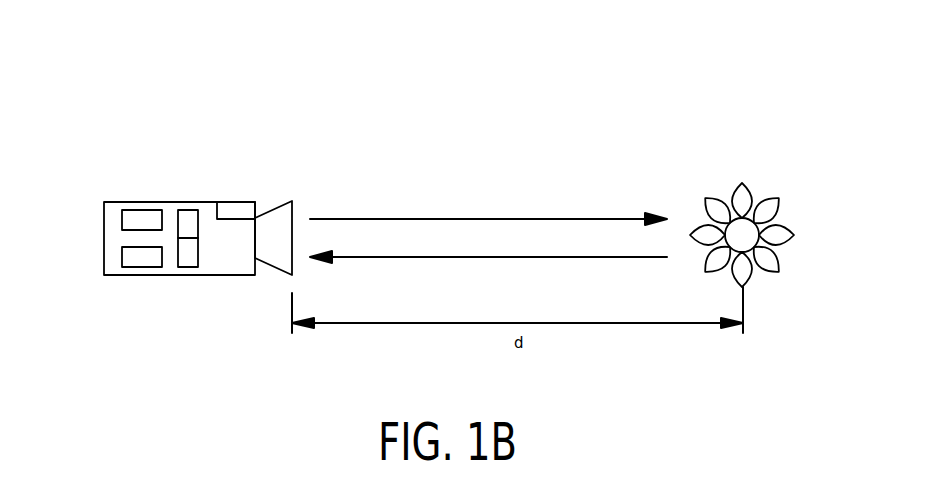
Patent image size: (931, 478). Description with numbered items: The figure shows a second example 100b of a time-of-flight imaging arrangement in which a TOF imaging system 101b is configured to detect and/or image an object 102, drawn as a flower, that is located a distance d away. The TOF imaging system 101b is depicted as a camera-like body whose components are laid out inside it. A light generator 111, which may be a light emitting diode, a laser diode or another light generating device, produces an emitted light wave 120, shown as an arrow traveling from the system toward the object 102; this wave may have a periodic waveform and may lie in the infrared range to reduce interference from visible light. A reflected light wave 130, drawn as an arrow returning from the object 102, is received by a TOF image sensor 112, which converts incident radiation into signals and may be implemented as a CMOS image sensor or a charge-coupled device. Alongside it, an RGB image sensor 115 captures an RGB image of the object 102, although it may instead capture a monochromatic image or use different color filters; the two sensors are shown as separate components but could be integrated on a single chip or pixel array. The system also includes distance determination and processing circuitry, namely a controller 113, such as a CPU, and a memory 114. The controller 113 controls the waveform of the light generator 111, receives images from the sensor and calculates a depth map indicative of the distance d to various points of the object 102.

The second example 100b is at (114, 91).
The TOF imaging system 101b is at (104, 238).
The object 102 is at (783, 225).
The light generator 111 is at (235, 200).
The TOF image sensor 112 is at (198, 218).
The controller 113 is at (117, 211).
The memory 114 is at (142, 267).
The RGB image sensor 115 is at (198, 258).
The emitted light wave 120 is at (448, 219).
The reflected light wave 130 is at (572, 257).